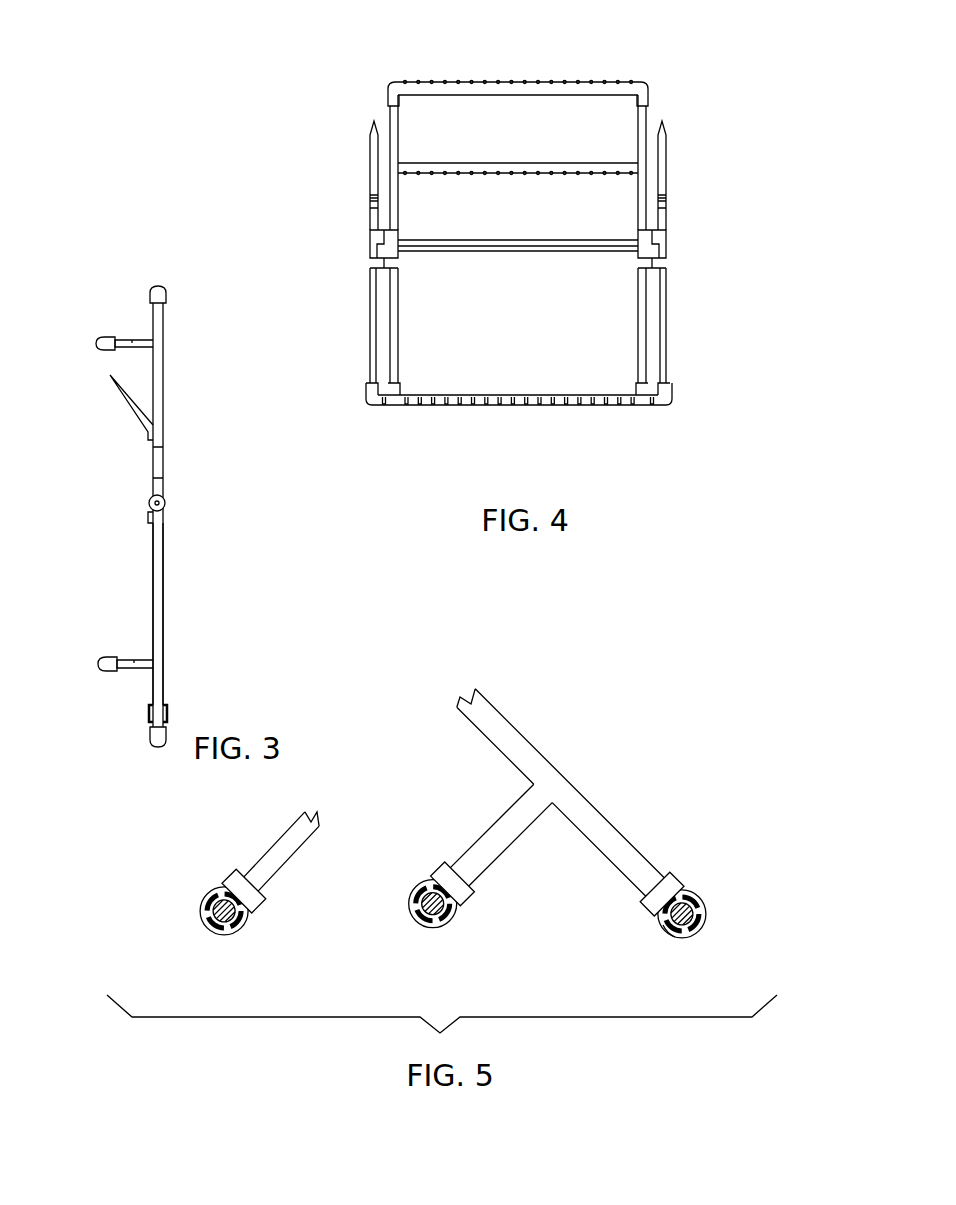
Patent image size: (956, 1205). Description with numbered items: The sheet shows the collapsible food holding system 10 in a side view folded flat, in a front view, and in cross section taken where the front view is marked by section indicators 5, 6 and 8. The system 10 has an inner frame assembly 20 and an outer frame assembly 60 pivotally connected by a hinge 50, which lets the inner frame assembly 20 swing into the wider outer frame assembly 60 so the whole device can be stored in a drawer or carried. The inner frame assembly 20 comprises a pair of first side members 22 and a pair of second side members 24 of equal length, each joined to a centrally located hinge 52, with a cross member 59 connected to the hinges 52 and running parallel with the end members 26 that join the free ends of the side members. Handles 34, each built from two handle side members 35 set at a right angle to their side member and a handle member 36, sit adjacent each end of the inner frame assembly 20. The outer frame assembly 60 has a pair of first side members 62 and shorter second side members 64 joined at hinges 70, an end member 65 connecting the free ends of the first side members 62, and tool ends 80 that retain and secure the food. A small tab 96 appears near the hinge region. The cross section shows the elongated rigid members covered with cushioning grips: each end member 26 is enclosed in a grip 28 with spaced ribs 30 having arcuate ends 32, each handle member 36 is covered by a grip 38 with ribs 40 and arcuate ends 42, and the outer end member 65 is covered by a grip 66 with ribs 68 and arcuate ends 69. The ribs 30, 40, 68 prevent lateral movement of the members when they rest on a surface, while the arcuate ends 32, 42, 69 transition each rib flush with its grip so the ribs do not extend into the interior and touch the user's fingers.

In FIG. 3, the collapsible food holding system 10 is at (145, 482).
In FIG. 4, the collapsible food holding system 10 is at (514, 245).
In FIG. 3, the inner frame assembly 20 is at (138, 514).
In FIG. 4, the inner frame assembly 20 is at (509, 212).
In FIG. 4, the first side member 22 is at (400, 322).
In FIG. 5, the first side member 22 is at (535, 747).
In FIG. 3, the second side member 24 is at (164, 397).
In FIG. 4, the second side member 24 is at (400, 120).
In FIG. 5, the end member 26 is at (690, 898).
In FIG. 4, the grip 28 is at (389, 80).
In FIG. 5, the grip 28 is at (683, 892).
In FIG. 3, the rib 30 is at (165, 288).
In FIG. 4, the rib 30 is at (500, 82).
In FIG. 5, the rib 30 is at (690, 937).
In FIG. 5, the arcuate end 32 is at (660, 934).
In FIG. 3, the handle 34 is at (130, 328).
In FIG. 5, the handle side member 35 is at (482, 840).
In FIG. 5, the handle member 36 is at (452, 920).
In FIG. 3, the grip 38 is at (96, 343).
In FIG. 4, the grip 38 is at (571, 162).
In FIG. 5, the grip 38 is at (452, 903).
In FIG. 4, the rib 40 is at (616, 175).
In FIG. 5, the rib 40 is at (418, 930).
In FIG. 5, the arcuate end 42 is at (412, 898).
In FIG. 3, the hinge 50 is at (146, 502).
In FIG. 4, the hinge 52 is at (640, 232).
In FIG. 4, the cross member 59 is at (570, 250).
In FIG. 3, the outer frame assembly 60 is at (164, 622).
In FIG. 4, the outer frame assembly 60 is at (522, 357).
In FIG. 3, the first side member 62 is at (152, 575).
In FIG. 4, the first side member 62 is at (370, 300).
In FIG. 5, the first side member 62 is at (286, 826).
In FIG. 3, the second side member 64 is at (152, 462).
In FIG. 4, the second side member 64 is at (370, 222).
In FIG. 5, the end member 65 is at (228, 925).
In FIG. 3, the grip 66 is at (166, 718).
In FIG. 4, the grip 66 is at (672, 405).
In FIG. 5, the grip 66 is at (248, 905).
In FIG. 4, the rib 68 is at (383, 407).
In FIG. 5, the rib 68 is at (208, 930).
In FIG. 5, the arcuate end 69 is at (206, 898).
In FIG. 4, the hinge 70 is at (372, 245).
In FIG. 3, the tool end 80 is at (115, 395).
In FIG. 4, the tool end 80 is at (370, 150).
In FIG. 3, the locking tab 96 is at (137, 513).
In FIG. 4, the locking tab 96 is at (372, 264).
In FIG. 4, the section line 5 is at (520, 378).
In FIG. 4, the section line 6 is at (663, 105).
In FIG. 4, the section line 8 is at (383, 220).